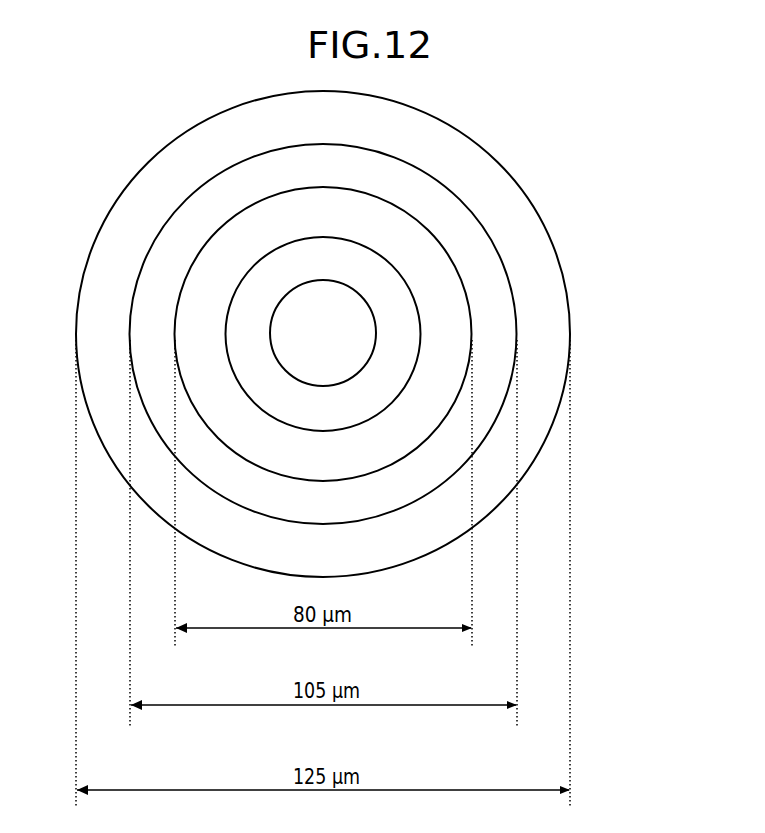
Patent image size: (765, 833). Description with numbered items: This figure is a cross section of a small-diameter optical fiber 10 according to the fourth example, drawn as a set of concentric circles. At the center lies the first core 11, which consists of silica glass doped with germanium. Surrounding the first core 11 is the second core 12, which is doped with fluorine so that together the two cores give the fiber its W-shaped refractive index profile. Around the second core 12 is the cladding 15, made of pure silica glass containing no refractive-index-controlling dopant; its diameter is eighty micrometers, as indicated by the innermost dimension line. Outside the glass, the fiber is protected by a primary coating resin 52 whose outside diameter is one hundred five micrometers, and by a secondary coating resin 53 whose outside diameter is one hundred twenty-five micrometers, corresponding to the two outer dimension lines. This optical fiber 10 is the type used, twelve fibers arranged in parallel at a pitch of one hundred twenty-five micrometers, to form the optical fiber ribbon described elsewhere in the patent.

The optical fiber 10 is at (364, 331).
The first core 11 is at (340, 341).
The second core 12 is at (439, 341).
The cladding 15 is at (414, 334).
The primary coating resin 52 is at (391, 334).
The secondary coating resin 53 is at (364, 334).